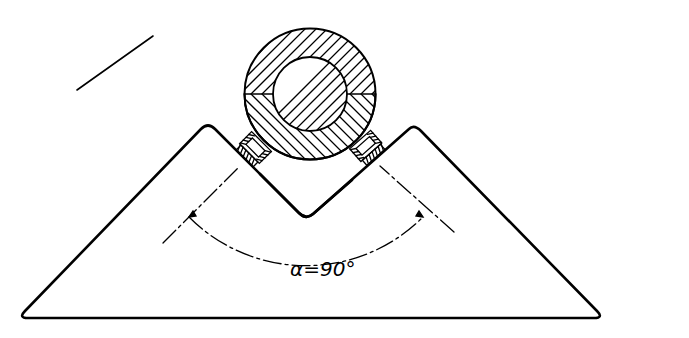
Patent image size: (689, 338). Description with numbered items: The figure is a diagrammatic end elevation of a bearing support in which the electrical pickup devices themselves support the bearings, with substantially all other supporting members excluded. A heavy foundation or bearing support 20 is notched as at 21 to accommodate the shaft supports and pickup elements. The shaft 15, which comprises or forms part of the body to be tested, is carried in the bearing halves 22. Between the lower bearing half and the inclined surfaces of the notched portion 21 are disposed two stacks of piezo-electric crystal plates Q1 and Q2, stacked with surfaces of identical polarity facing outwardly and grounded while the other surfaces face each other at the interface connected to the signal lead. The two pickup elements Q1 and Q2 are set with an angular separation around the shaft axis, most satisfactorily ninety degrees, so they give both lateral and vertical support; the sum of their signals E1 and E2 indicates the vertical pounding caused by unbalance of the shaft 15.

The shaft 15 is at (362, 39).
The bearing support 20 is at (462, 197).
The notched portion 21 is at (328, 198).
The bearing halves 22 is at (258, 111).
The piezo-electric crystal plate stack Q1 is at (246, 133).
The piezo-electric crystal plate stack Q2 is at (378, 136).
The signal from crystal Q1 E1 is at (258, 152).
The signal from crystal Q2 E2 is at (357, 140).